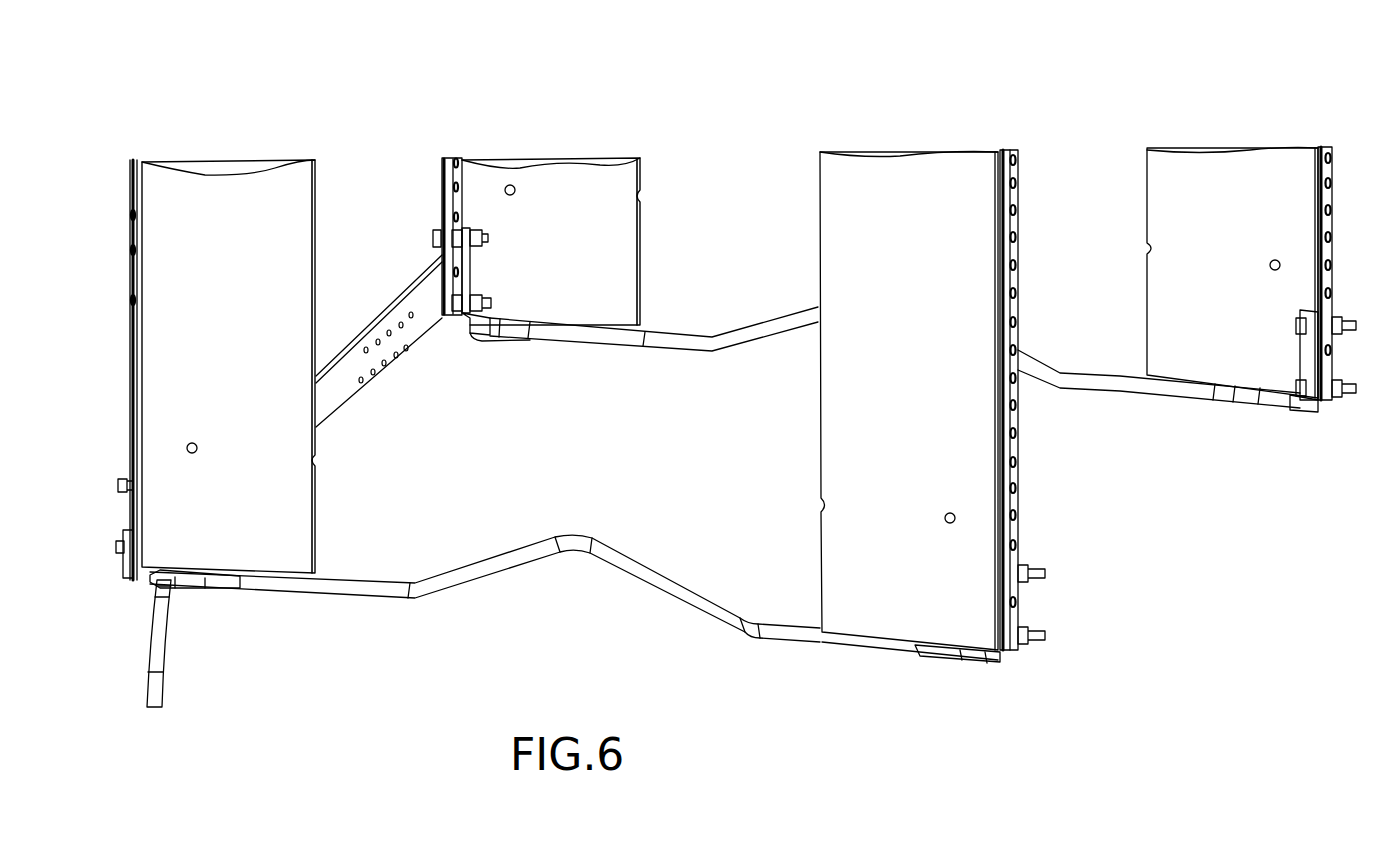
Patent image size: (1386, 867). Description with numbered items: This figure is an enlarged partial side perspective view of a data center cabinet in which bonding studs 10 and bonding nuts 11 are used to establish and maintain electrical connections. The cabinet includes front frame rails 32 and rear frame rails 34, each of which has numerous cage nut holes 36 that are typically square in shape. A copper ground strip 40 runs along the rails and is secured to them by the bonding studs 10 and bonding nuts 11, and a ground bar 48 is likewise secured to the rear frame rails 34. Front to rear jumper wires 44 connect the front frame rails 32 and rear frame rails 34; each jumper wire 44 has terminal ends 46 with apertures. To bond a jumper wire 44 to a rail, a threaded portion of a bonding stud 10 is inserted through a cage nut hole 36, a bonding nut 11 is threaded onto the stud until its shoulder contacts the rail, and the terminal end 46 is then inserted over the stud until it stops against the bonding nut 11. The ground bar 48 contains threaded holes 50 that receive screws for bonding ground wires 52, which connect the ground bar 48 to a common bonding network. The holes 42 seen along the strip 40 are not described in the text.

The bonding stud 10 is at (118, 486).
The bonding nut 11 is at (434, 240).
The front frame rail 32 is at (880, 178).
The rear frame rail 34 is at (251, 195).
The cage nut hole 36 is at (478, 228).
The copper ground strip 40 is at (136, 215).
The holes 42 is at (1332, 238).
The front to rear jumper wire 44 is at (680, 345).
The terminal end 46 is at (485, 338).
The ground bar 48 is at (328, 405).
The threaded hole 50 is at (399, 355).
The ground wire 52 is at (158, 643).